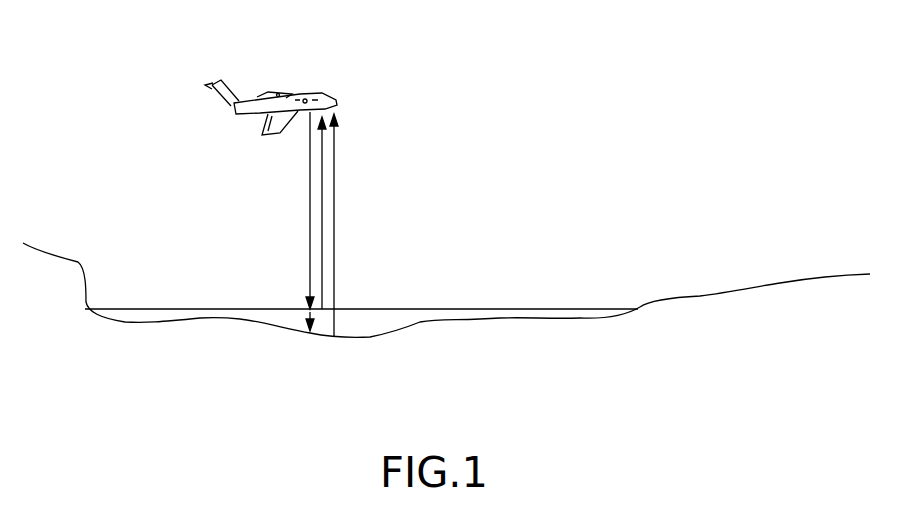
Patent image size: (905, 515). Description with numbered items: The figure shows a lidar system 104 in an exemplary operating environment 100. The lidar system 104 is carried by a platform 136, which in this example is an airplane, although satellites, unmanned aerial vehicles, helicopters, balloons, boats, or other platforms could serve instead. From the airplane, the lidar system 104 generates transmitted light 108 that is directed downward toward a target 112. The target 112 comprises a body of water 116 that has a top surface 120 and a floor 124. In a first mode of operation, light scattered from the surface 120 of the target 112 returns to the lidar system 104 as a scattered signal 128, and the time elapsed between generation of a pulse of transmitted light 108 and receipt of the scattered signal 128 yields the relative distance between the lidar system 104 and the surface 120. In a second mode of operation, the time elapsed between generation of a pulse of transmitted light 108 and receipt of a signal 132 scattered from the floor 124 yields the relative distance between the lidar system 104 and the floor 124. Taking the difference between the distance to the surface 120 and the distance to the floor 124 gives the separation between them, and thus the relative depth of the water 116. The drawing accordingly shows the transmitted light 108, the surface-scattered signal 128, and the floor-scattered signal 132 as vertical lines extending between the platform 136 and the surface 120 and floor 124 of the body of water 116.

The operating environment 100 is at (861, 46).
The lidar system 104 is at (298, 100).
The platform 136 is at (276, 94).
The transmitted light 108 is at (310, 198).
The scattered signal 128 is at (322, 253).
The signal scattered from the floor 132 is at (336, 178).
The top surface 120 is at (436, 309).
The body of water 116 is at (158, 317).
The floor 124 is at (397, 328).
The target 112 is at (655, 270).